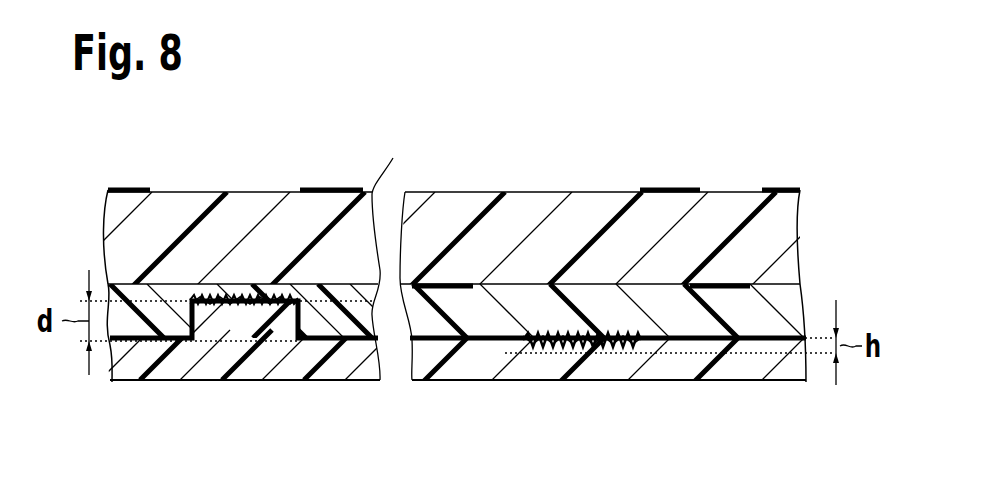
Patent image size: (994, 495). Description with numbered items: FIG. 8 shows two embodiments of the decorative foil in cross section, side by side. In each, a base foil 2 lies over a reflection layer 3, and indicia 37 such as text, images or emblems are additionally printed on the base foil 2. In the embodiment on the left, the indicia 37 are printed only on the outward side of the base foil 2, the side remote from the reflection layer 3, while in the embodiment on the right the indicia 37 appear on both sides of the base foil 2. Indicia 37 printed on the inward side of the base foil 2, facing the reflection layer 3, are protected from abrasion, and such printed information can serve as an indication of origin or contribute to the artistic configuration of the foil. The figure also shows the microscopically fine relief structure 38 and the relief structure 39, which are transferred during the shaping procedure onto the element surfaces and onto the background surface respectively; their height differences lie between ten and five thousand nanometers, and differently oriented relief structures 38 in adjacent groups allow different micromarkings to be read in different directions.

The base foil 2 is at (433, 212).
The reflection layer 3 is at (440, 343).
The indicia 37 is at (302, 189).
The relief structure 38 is at (250, 304).
The relief structure 39 is at (585, 348).